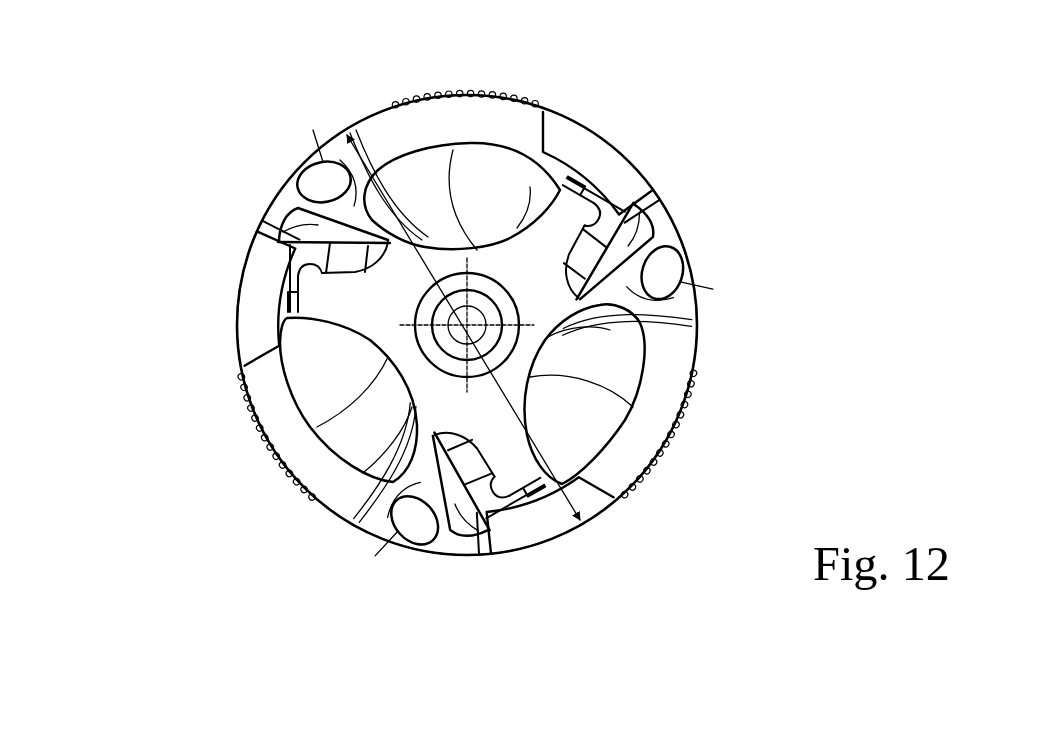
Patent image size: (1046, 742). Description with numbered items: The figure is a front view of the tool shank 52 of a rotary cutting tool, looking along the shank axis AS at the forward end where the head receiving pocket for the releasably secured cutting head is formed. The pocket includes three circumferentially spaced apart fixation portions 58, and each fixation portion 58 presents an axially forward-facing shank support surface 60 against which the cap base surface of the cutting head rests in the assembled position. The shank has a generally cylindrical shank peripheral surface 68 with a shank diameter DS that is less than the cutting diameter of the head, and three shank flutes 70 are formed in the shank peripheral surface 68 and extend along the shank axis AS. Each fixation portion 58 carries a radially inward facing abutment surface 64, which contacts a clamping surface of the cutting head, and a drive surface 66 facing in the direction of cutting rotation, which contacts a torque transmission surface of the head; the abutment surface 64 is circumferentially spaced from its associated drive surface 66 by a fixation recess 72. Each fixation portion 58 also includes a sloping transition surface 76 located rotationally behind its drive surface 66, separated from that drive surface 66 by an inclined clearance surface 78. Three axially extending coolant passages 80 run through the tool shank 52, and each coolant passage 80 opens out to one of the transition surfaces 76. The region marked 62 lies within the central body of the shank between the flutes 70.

The tool shank 52 is at (172, 228).
The fixation portion 58 is at (233, 297).
The shank support surface 60 is at (271, 331).
The rotor body 62 is at (391, 311).
The abutment surface 64 is at (512, 118).
The drive surface 66 is at (300, 207).
The shank peripheral surface 68 is at (649, 177).
The shank flute 70 is at (496, 186).
The fixation recess 72 is at (286, 236).
The transition surface 76 is at (318, 160).
The clearance surface 78 is at (307, 232).
The coolant passage 80 is at (317, 182).
The shank axis AS is at (481, 321).
The shank diameter DS is at (345, 128).